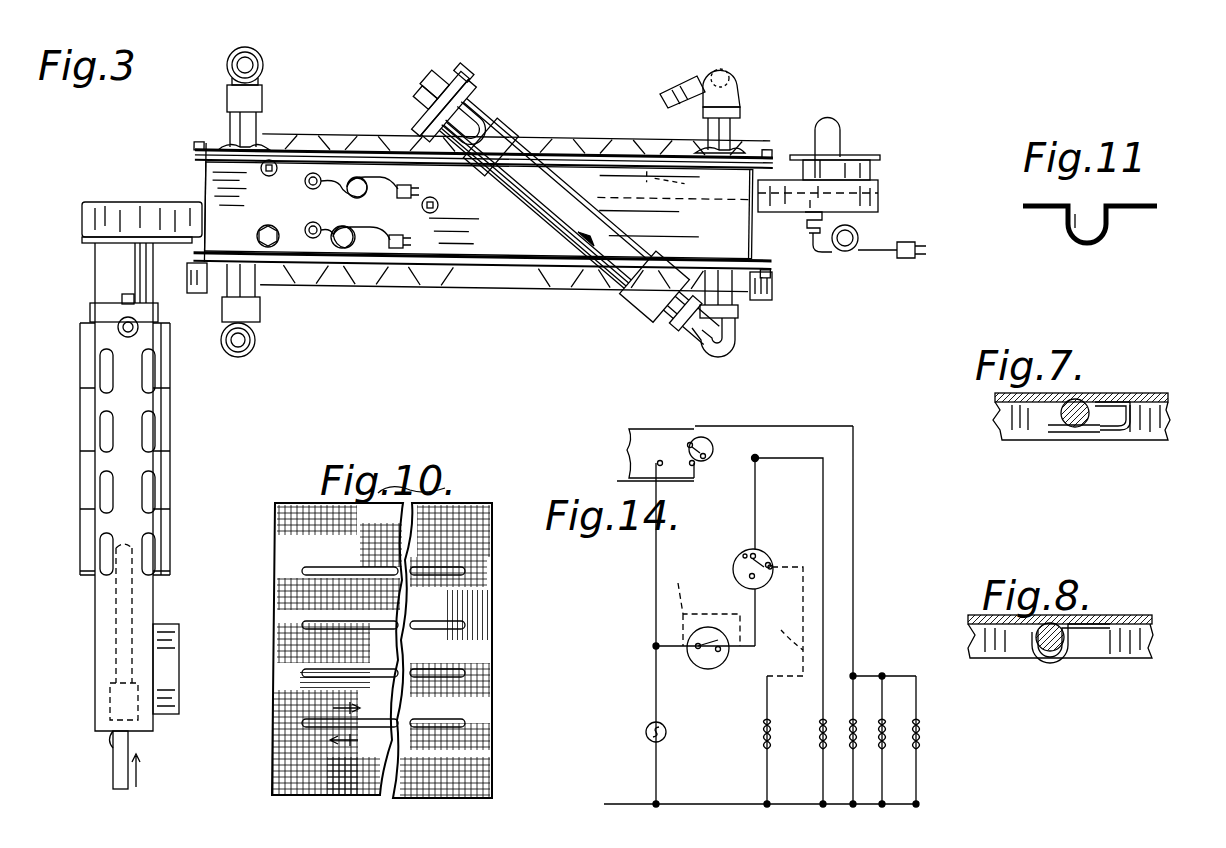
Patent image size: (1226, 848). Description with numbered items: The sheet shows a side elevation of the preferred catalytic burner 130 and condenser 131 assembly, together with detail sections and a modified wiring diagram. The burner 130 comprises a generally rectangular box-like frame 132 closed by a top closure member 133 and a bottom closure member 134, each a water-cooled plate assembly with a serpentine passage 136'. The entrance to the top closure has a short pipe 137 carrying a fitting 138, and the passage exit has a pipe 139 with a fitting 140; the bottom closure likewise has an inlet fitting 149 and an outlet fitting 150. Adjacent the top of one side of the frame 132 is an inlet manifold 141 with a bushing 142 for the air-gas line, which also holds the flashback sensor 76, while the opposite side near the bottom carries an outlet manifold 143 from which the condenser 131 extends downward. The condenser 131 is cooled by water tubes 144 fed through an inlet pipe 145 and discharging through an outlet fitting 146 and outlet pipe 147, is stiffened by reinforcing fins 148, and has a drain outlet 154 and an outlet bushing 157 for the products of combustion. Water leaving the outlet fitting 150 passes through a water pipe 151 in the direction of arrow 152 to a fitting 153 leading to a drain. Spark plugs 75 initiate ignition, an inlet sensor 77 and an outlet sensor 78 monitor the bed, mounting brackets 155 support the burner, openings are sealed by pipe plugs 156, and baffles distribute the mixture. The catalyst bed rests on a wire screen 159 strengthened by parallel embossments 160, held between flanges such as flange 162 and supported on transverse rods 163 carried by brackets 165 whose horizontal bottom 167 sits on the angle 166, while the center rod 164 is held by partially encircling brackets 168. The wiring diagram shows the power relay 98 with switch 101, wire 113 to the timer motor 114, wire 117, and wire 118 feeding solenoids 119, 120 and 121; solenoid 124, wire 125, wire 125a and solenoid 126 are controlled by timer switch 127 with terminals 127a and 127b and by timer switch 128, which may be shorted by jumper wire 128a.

In FIG. 3, the spark plug 75 is at (258, 229).
In FIG. 3, the flashback sensor 76 is at (826, 253).
In FIG. 3, the inlet sensor 77 is at (322, 192).
In FIG. 3, the outlet sensor 78 is at (378, 222).
In FIG. 14, the power relay 98 is at (671, 426).
In FIG. 14, the switch 101 is at (713, 446).
In FIG. 14, the wire 113 is at (656, 556).
In FIG. 14, the timer motor 114 is at (650, 742).
In FIG. 14, the wire 117 is at (680, 483).
In FIG. 14, the wire 118 is at (853, 548).
In FIG. 14, the operating solenoid 119 is at (858, 728).
In FIG. 14, the solenoid 120 is at (887, 725).
In FIG. 14, the solenoid 121 is at (922, 730).
In FIG. 14, the solenoid 124 is at (813, 730).
In FIG. 14, the wire 125 is at (760, 600).
In FIG. 14, the wire 125a is at (786, 628).
In FIG. 14, the solenoid 126 is at (762, 742).
In FIG. 14, the timer switch 127 is at (757, 548).
In FIG. 14, the terminal 127a is at (771, 565).
In FIG. 14, the terminal 127b is at (745, 556).
In FIG. 14, the timer switch 128 is at (696, 670).
In FIG. 14, the jumper wire 128a is at (702, 603).
In FIG. 3, the catalytic burner 130 is at (474, 290).
In FIG. 3, the condenser 131 is at (180, 436).
In FIG. 3, the frame 132 is at (478, 206).
In FIG. 3, the top closure member 133 is at (588, 138).
In FIG. 3, the bottom closure member 134 is at (590, 298).
In FIG. 3, the serpentine passage 136' is at (484, 125).
In FIG. 3, the pipe 137 is at (732, 132).
In FIG. 3, the fitting 138 is at (694, 78).
In FIG. 3, the pipe 139 is at (260, 125).
In FIG. 3, the fitting 140 is at (263, 69).
In FIG. 3, the inlet manifold 141 is at (878, 196).
In FIG. 3, the bushing 142 is at (870, 168).
In FIG. 3, the outlet manifold 143 is at (105, 212).
In FIG. 3, the water tubes 144 is at (135, 412).
In FIG. 3, the inlet pipe 145 is at (117, 610).
In FIG. 3, the outlet fitting 146 is at (98, 312).
In FIG. 3, the outlet pipe 147 is at (116, 326).
In FIG. 3, the reinforcing fins 148 is at (162, 385).
In FIG. 3, the inlet fitting 149 is at (262, 310).
In FIG. 3, the outlet fitting 150 is at (738, 335).
In FIG. 3, the water pipe 151 is at (480, 229).
In FIG. 3, the arrow 152 is at (598, 250).
In FIG. 3, the fitting 153 is at (440, 152).
In FIG. 3, the drain outlet 154 is at (113, 770).
In FIG. 3, the mounting brackets 155 is at (200, 295).
In FIG. 3, the pipe plugs 156 is at (268, 176).
In FIG. 3, the outlet bushing 157 is at (172, 652).
In FIG. 10, the foraminous member 159 is at (478, 695).
In FIG. 11, the foraminous member 159 is at (1130, 212).
In FIG. 10, the embossments 160 is at (325, 623).
In FIG. 11, the embossments 160 is at (1076, 238).
In FIG. 8, the flange 162 is at (970, 604).
In FIG. 7, the transverse rods 163 is at (1030, 440).
In FIG. 8, the center rod 164 is at (1045, 660).
In FIG. 7, the bracket 165 is at (1122, 404).
In FIG. 7, the angle 166 is at (1000, 428).
In FIG. 8, the angle 166 is at (1155, 650).
In FIG. 7, the bottom 167 is at (1073, 428).
In FIG. 8, the partially encircling brackets 168 is at (1062, 658).